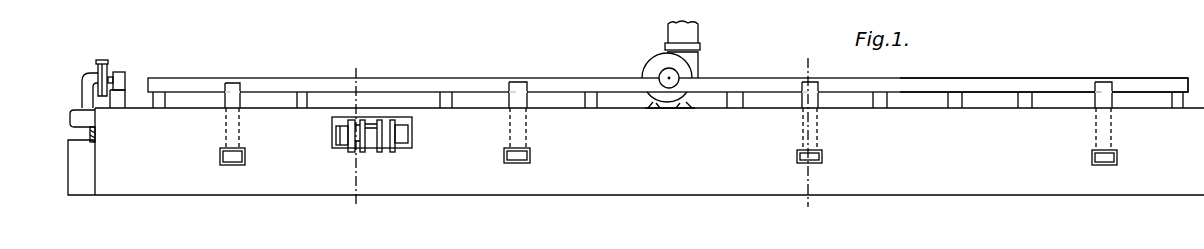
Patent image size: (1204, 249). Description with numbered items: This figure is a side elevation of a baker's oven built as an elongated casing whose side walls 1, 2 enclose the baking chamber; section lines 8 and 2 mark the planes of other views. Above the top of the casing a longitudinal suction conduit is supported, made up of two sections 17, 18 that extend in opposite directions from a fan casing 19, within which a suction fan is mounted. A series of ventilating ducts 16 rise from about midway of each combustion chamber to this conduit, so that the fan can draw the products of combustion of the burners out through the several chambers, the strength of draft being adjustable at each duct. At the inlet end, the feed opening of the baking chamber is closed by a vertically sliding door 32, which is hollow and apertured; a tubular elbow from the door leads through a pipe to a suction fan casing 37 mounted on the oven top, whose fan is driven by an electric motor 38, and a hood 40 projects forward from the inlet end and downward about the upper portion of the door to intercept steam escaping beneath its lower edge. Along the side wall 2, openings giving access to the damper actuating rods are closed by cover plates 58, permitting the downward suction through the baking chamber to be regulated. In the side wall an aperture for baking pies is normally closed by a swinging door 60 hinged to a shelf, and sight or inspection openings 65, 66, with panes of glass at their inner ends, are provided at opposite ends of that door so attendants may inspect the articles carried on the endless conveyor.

The side wall 1 is at (636, 151).
The side wall 2 is at (808, 134).
The section line 8- 8 is at (356, 137).
The ventilating duct 16 is at (305, 101).
The conduit section 17 is at (545, 82).
The conduit section 18 is at (950, 82).
The fan casing 19 is at (653, 62).
The vertically sliding door 32 is at (93, 133).
The suction fan casing 37 is at (95, 73).
The electric motor 38 is at (122, 72).
The hood 40 is at (82, 118).
The cover plate 58 is at (233, 164).
The swinging door 60 is at (370, 138).
The sight opening 65 is at (340, 138).
The sight opening 66 is at (408, 135).